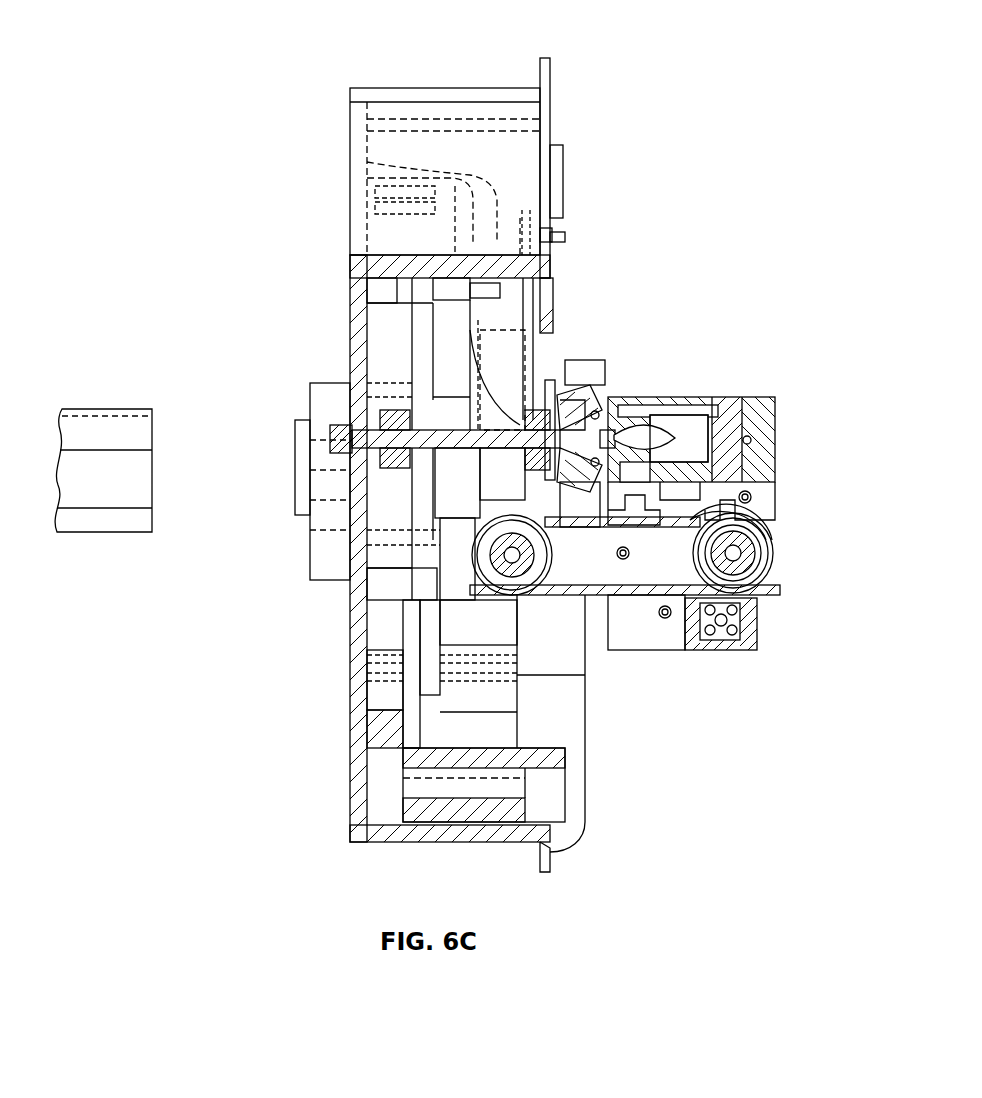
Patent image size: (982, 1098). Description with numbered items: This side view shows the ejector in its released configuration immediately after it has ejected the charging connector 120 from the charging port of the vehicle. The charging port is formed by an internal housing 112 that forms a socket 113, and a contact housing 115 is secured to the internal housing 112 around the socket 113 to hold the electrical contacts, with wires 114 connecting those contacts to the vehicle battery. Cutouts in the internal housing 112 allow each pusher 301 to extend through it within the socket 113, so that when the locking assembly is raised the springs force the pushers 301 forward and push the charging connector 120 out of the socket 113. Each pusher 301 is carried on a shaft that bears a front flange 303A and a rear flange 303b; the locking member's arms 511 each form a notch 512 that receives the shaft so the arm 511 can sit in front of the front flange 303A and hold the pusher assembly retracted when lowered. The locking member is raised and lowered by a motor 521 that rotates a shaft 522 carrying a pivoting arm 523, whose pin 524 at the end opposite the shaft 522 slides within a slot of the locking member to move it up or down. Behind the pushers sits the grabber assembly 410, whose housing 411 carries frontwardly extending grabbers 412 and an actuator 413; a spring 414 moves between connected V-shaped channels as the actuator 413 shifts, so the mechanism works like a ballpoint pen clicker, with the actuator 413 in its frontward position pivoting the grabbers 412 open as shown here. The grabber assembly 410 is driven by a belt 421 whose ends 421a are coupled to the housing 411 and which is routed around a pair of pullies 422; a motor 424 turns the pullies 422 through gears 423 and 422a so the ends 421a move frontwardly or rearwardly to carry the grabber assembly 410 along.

The internal housing 112 is at (425, 125).
The socket 113 is at (318, 370).
The wires 114 is at (540, 715).
The contact housing 115 is at (372, 445).
The charging connector 120 is at (115, 433).
The pusher 301 is at (468, 380).
The front flange 303A is at (542, 430).
The rear flange 303b is at (558, 425).
The grabber assembly 410 is at (787, 352).
The housing 411 is at (720, 397).
The grabbers 412 is at (590, 420).
The actuator 413 is at (752, 484).
The spring 414 is at (695, 436).
The belt 421 is at (565, 600).
The ends 421a is at (720, 510).
The pullies 422 is at (482, 560).
The gear 422a is at (760, 582).
The gears 423 is at (722, 652).
The motor 424 is at (757, 632).
The arms 511 is at (515, 292).
The notch 512 is at (515, 330).
The motor 521 is at (428, 248).
The shaft 522 is at (532, 282).
The pivoting arm 523 is at (522, 222).
The pin 524 is at (548, 238).